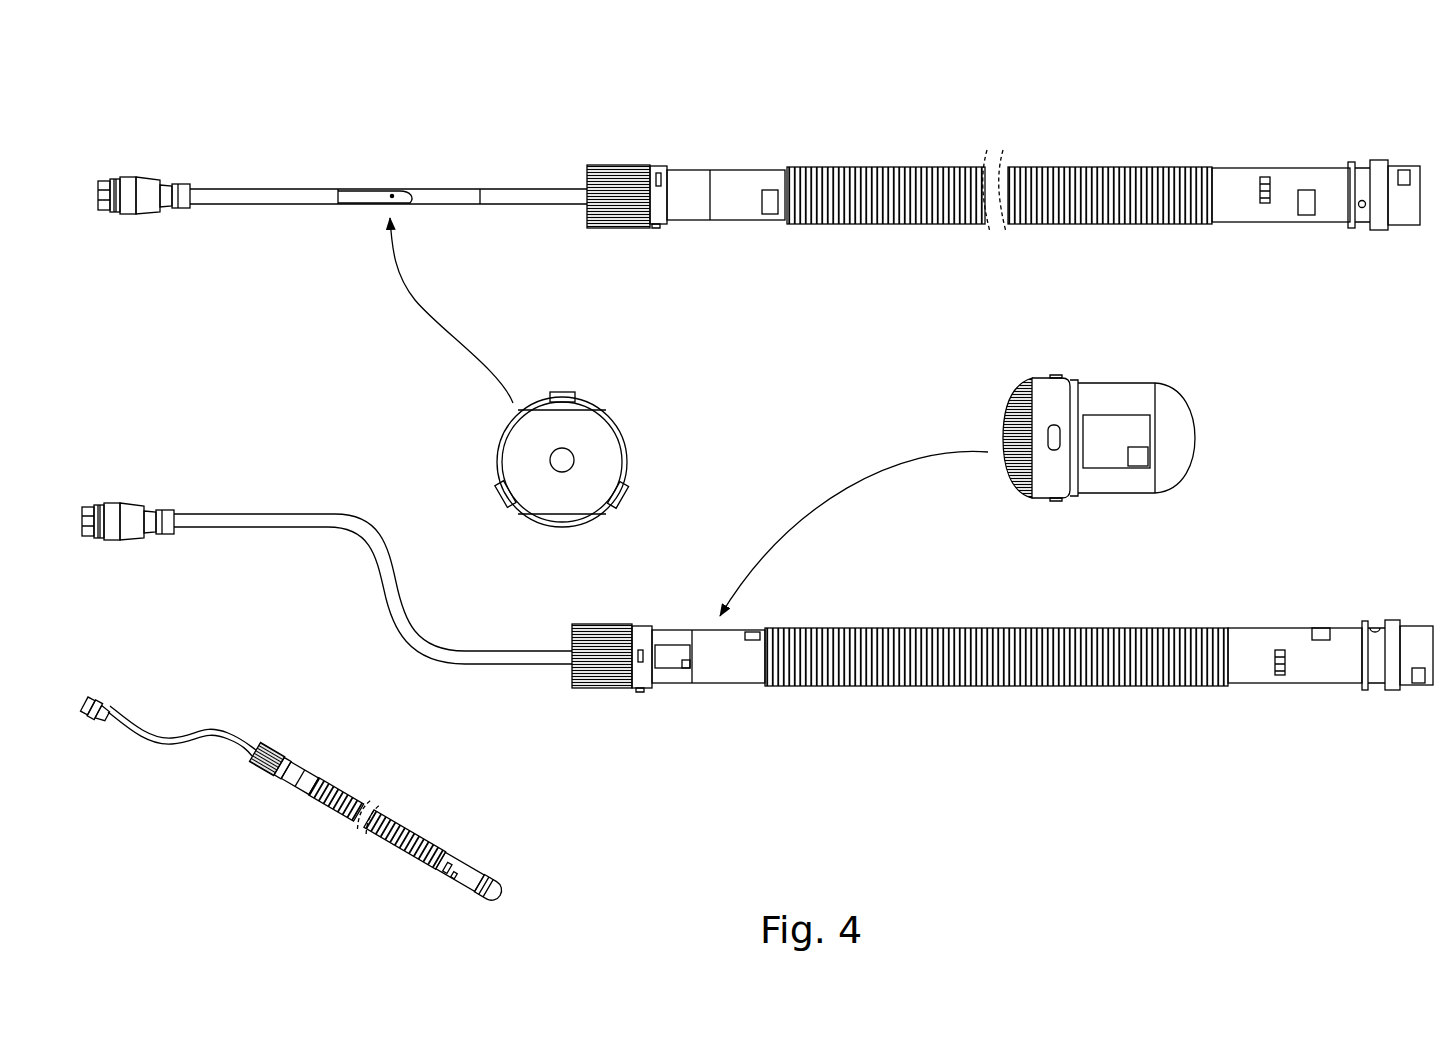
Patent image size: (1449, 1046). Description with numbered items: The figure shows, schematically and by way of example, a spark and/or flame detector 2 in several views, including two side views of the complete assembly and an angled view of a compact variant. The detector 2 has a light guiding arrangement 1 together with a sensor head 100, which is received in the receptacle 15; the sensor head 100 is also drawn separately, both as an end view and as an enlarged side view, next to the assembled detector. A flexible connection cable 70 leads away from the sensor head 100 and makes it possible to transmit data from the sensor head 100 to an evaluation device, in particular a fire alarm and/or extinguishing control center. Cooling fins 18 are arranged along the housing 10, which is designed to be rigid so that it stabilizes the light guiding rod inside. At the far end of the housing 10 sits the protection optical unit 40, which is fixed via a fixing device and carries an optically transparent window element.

The light guiding arrangement 1 is at (1292, 256).
The spark and/or flame detector 2 is at (898, 285).
The housing 10 is at (1225, 178).
The receptacle 15 is at (746, 178).
The cooling fins 18 is at (1068, 182).
The protection optical unit 40 is at (1372, 150).
The connection cable 70 is at (305, 188).
The sensor head 100 is at (700, 250).